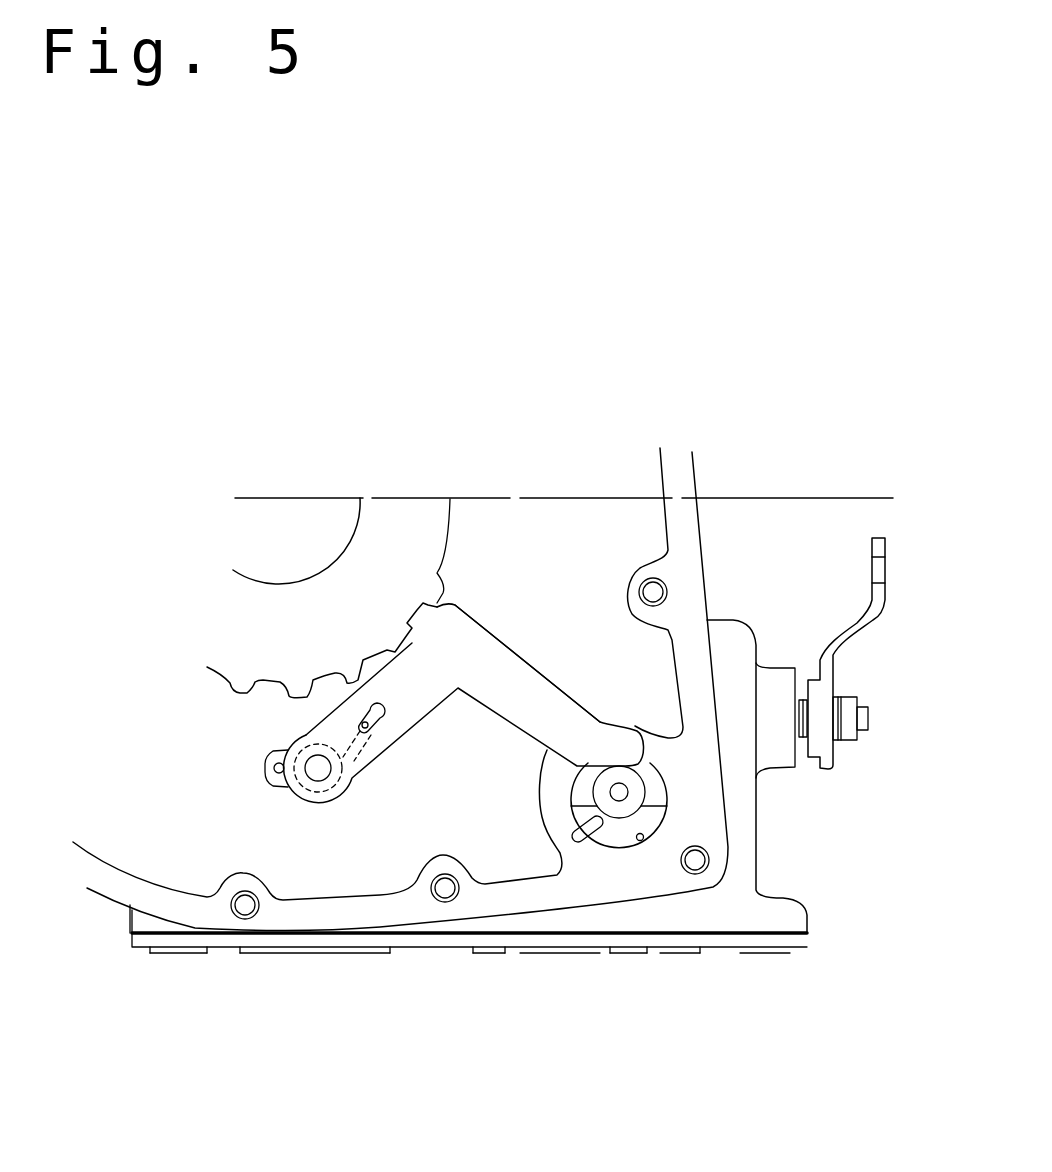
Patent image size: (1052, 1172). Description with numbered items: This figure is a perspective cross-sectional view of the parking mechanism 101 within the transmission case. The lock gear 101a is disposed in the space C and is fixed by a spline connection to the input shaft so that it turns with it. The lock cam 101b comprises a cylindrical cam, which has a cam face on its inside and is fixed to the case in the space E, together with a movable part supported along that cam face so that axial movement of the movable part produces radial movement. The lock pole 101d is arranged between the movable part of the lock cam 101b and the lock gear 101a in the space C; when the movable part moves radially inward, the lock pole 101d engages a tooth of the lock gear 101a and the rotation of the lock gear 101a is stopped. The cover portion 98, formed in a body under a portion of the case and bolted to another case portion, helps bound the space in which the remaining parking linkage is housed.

The parking mechanism 101 is at (503, 628).
The lock gear 101a is at (302, 653).
The lock cam 101b is at (668, 790).
The lock pole 101d is at (535, 690).
The cover portion 98 is at (597, 877).
The space E is at (638, 842).
The space C is at (448, 804).